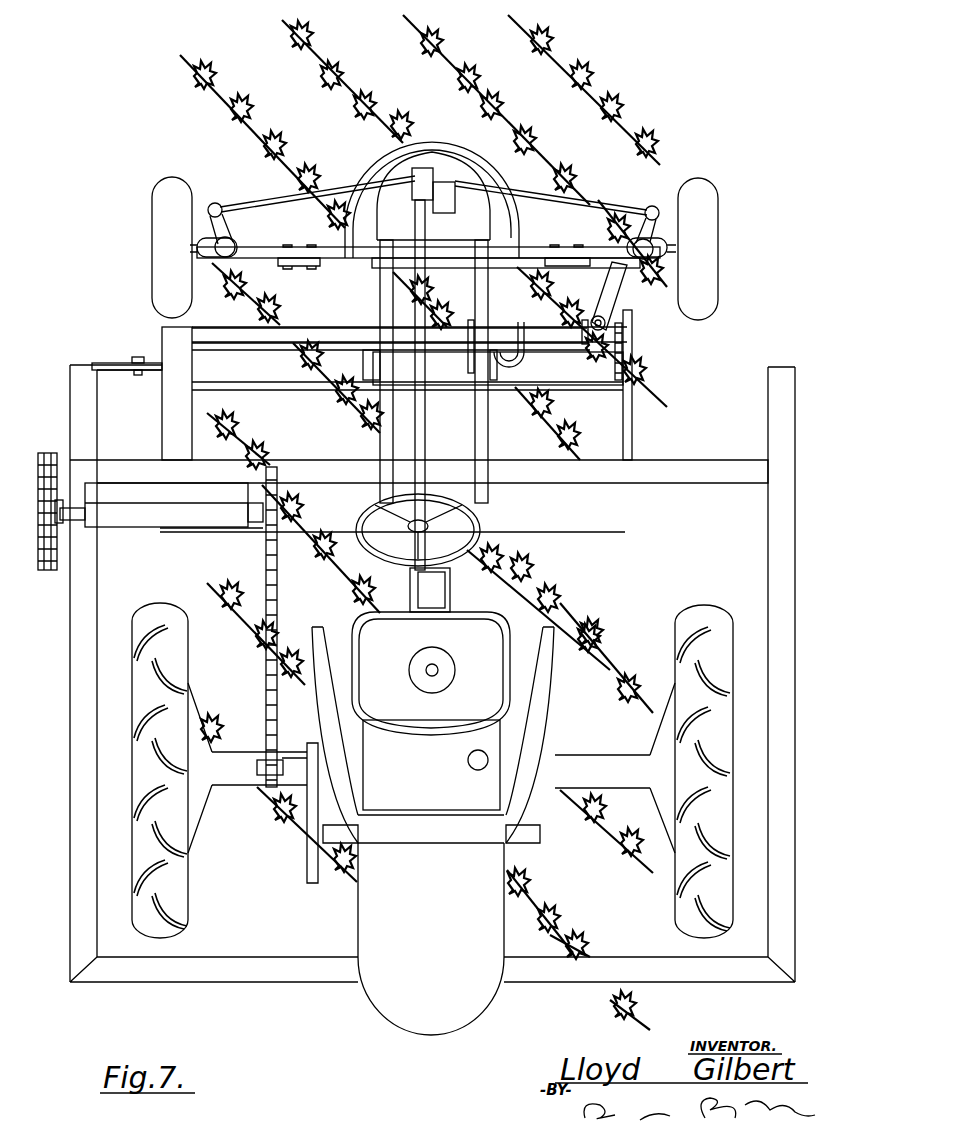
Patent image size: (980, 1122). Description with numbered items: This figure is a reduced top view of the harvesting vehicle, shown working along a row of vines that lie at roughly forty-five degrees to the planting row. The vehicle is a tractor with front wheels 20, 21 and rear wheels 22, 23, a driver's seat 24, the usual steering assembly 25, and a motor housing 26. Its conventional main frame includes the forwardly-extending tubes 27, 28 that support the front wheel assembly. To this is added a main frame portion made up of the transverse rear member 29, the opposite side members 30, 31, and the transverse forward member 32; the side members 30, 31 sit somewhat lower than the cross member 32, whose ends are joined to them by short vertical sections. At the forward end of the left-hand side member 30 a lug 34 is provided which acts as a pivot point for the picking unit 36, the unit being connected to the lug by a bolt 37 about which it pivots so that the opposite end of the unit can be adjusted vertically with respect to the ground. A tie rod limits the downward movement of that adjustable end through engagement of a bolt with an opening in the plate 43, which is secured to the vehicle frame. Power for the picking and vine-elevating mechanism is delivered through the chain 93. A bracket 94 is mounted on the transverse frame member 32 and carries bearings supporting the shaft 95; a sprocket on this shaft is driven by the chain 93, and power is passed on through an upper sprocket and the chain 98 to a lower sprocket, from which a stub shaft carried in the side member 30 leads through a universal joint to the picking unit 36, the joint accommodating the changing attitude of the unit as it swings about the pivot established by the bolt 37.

The front wheel 20 is at (155, 182).
The front wheel 21 is at (718, 213).
The rear wheel 22 is at (190, 890).
The rear wheel 23 is at (707, 933).
The driver's seat 24 is at (412, 697).
The steering assembly 25 is at (466, 552).
The motor housing 26 is at (440, 994).
The forwardly-extending tube 27 is at (482, 415).
The forwardly-extending tube 28 is at (380, 433).
The transverse rear member 29 is at (288, 977).
The side member 30 is at (76, 750).
The side member 31 is at (768, 527).
The transverse forward member 32 is at (672, 465).
The lug 34 is at (107, 363).
The picking unit 36 is at (630, 397).
The bolt 37 is at (138, 357).
The plate 43 is at (616, 297).
The chain 93 is at (265, 567).
The bracket 94 is at (173, 515).
The shaft 95 is at (75, 523).
The chain 98 is at (45, 572).